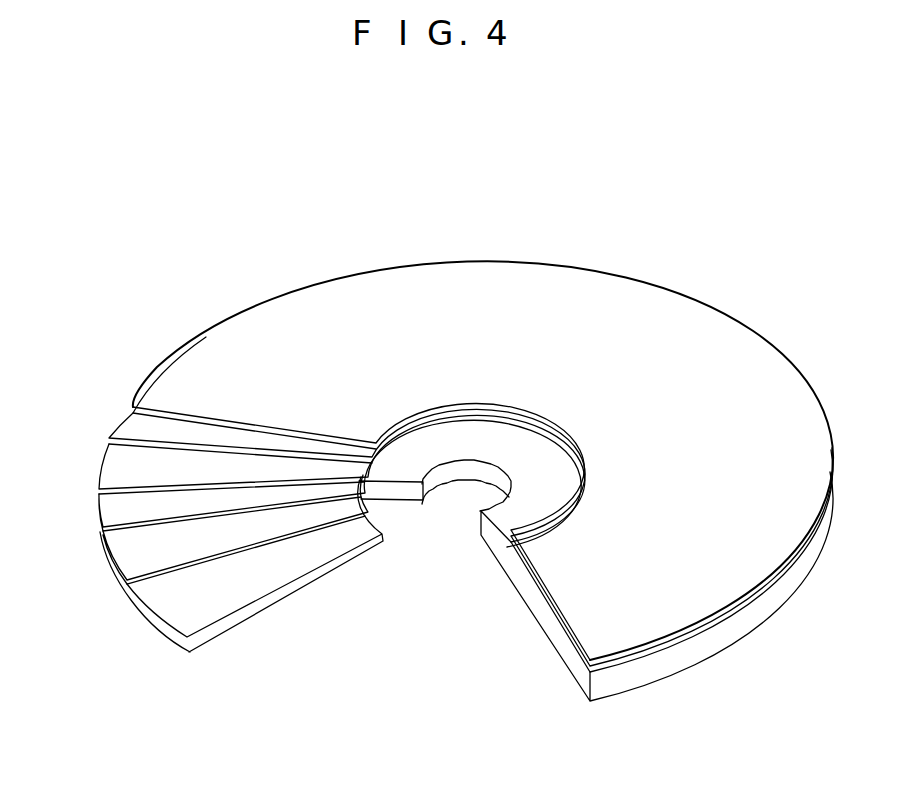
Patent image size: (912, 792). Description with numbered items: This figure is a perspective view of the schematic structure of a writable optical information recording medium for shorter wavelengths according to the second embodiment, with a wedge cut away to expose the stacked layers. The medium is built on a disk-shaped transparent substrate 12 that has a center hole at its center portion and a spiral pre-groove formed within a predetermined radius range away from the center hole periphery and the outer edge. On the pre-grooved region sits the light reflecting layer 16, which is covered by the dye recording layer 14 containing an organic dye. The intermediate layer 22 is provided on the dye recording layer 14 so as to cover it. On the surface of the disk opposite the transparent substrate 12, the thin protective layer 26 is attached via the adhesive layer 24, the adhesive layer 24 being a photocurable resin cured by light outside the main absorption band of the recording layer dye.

The transparent substrate 12 is at (168, 607).
The dye recording layer 14 is at (104, 508).
The light reflecting layer 16 is at (130, 549).
The intermediate layer 22 is at (108, 466).
The adhesive layer 24 is at (130, 421).
The thin protective layer 26 is at (196, 357).